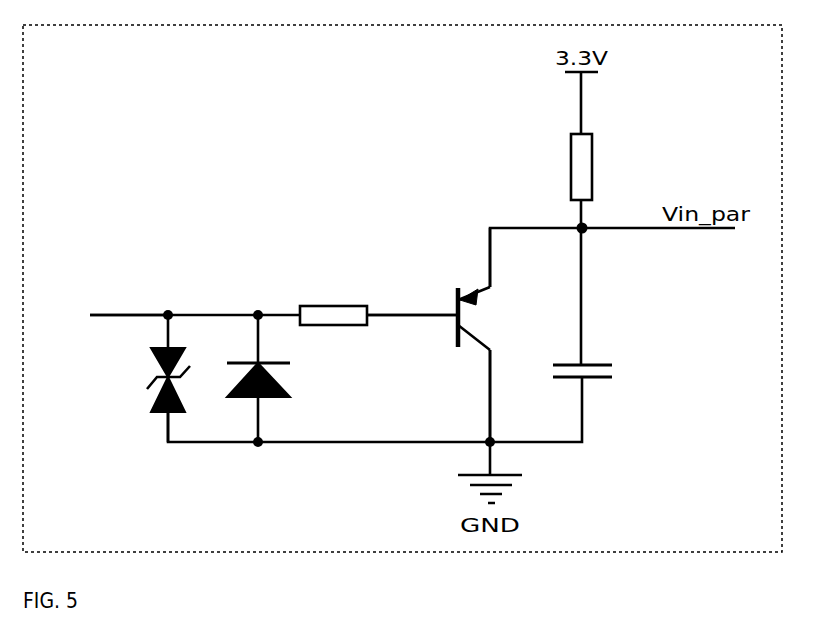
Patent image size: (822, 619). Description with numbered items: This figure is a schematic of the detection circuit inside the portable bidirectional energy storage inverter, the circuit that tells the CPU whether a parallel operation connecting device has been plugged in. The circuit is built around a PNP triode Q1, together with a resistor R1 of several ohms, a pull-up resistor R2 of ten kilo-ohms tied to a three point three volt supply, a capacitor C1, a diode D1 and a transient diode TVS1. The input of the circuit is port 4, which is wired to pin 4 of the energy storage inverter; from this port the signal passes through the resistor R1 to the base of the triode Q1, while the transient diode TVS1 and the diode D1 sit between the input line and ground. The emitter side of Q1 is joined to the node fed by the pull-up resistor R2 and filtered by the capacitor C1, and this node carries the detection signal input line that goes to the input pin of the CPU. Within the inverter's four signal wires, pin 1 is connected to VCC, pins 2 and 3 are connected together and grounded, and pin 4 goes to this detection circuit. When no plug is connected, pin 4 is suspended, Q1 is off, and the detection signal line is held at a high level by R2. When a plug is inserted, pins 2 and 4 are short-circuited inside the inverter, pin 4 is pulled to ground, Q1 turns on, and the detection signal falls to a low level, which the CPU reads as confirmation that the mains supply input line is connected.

The transient diode TVS1 is at (123, 383).
The diode D1 is at (274, 380).
The resistor R1 is at (333, 300).
The PNP triode Q1 is at (496, 318).
The resistor R2 is at (598, 167).
The capacitor C1 is at (598, 373).
The pin 1 is at (346, 308).
The pin 2 is at (317, 337).
The pin 3 is at (476, 396).
The pin 4 is at (129, 303).